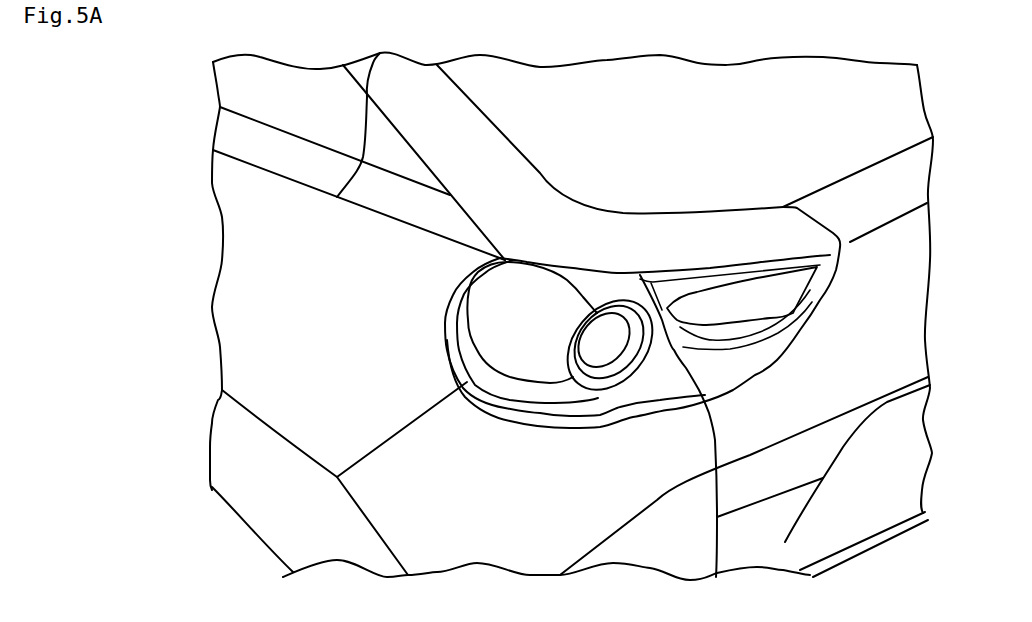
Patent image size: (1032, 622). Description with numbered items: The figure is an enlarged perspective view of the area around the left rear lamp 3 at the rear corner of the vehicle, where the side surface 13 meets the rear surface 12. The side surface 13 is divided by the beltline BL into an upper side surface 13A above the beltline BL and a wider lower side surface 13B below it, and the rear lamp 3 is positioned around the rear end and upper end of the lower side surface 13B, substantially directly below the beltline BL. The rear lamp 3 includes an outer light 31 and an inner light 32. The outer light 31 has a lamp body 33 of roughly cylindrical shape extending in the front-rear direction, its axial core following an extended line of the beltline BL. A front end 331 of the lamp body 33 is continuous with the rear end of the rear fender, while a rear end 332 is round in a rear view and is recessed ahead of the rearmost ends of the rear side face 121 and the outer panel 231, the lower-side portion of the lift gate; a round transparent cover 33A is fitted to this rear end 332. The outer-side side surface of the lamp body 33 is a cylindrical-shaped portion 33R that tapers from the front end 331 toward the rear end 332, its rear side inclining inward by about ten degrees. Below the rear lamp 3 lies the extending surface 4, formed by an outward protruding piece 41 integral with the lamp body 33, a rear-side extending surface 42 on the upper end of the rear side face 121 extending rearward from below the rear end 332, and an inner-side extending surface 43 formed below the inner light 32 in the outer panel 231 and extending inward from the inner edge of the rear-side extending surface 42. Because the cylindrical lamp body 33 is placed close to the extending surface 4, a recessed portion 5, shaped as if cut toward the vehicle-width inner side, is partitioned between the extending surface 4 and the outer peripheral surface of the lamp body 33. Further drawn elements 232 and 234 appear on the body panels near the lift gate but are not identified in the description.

The rear lamp 3 is at (703, 170).
The extending surface 4 is at (470, 487).
The recessed portion 5 is at (518, 392).
The rear surface 12 is at (883, 487).
The side surface 13 is at (210, 240).
The upper side surface 13A is at (275, 95).
The lower side surface 13B is at (278, 312).
The beltline BL is at (380, 53).
The outer light 31 is at (592, 250).
The inner light 32 is at (710, 260).
The lamp body 33 is at (527, 283).
The transparent cover 33A is at (607, 347).
The cylindrical-shaped portion 33R is at (517, 327).
The front end 331 is at (460, 289).
The rear end 332 is at (603, 313).
The outward protruding piece 41 is at (498, 375).
The rear-side extending surface 42 is at (620, 403).
The inner-side extending surface 43 is at (737, 370).
The rear side face 121 is at (458, 528).
The outer panel 231 is at (868, 188).
The second body panel 232 is at (703, 95).
The panel boundary line 234 is at (463, 118).